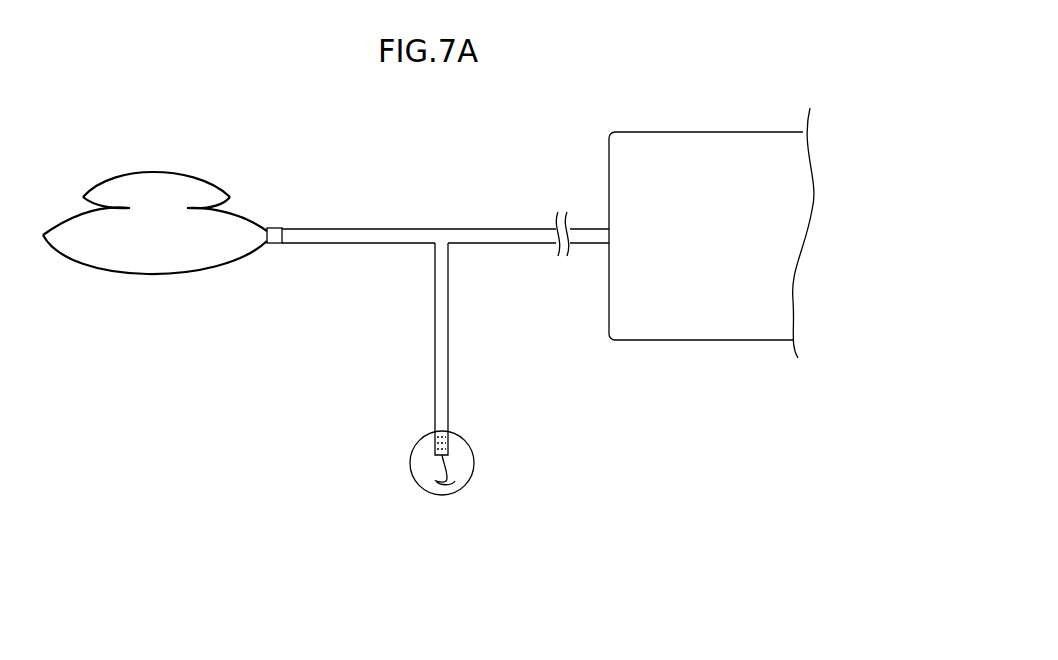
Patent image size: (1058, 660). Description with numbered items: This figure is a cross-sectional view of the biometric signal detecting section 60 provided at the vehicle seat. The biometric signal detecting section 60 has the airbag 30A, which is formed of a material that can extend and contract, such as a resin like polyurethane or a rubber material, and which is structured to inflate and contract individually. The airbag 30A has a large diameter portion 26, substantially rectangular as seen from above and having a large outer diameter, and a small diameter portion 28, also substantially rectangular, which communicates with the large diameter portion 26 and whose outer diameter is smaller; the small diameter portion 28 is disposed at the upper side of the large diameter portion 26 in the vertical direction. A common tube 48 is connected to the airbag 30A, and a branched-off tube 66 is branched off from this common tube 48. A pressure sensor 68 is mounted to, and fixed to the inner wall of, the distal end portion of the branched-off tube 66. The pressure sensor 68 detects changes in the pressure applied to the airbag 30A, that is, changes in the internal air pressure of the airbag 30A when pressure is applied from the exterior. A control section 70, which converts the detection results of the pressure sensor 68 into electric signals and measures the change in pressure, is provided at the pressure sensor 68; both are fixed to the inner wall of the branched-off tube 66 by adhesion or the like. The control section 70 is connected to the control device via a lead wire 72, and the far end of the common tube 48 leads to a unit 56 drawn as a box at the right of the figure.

The airbag 30A is at (155, 219).
The large diameter portion 26 is at (170, 257).
The small diameter portion 28 is at (183, 188).
The common tube 48 is at (373, 228).
The pump unit 56 is at (705, 132).
The biometric signal detecting section 60 is at (280, 407).
The branched-off tube 66 is at (450, 344).
The pressure sensor 68 is at (430, 447).
The control section 70 is at (430, 457).
The lead wire 72 is at (463, 470).